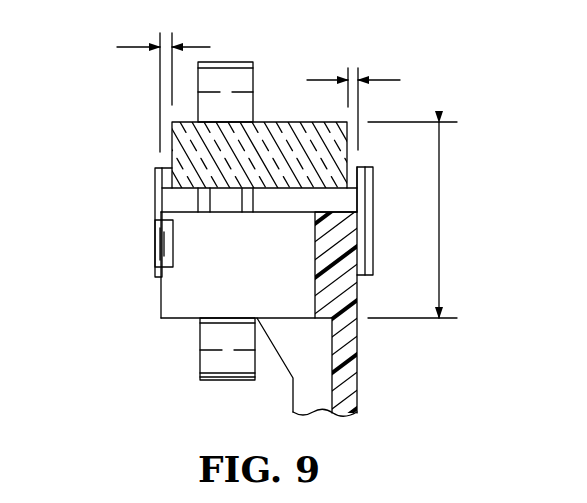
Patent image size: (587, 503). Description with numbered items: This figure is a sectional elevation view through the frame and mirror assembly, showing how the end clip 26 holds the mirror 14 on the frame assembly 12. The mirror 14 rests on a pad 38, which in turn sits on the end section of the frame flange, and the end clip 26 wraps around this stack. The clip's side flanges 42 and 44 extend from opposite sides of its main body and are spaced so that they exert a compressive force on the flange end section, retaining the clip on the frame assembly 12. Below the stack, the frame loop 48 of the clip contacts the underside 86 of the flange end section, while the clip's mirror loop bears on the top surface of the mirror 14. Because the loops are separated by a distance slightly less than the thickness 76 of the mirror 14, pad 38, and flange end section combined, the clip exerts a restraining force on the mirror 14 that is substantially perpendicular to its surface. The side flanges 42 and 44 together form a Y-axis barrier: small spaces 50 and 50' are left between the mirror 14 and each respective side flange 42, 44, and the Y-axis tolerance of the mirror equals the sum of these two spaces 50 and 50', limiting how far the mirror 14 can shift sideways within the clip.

The frame assembly 12 is at (362, 368).
The mirror 14 is at (282, 122).
The end clip 26 is at (153, 240).
The pad 38 is at (255, 198).
The side flange 42 is at (155, 172).
The side flange 44 is at (375, 232).
The frame loop 48 is at (215, 380).
The space 50 is at (158, 92).
The space 50' is at (365, 82).
The thickness 76 is at (440, 215).
The underside 86 is at (177, 322).